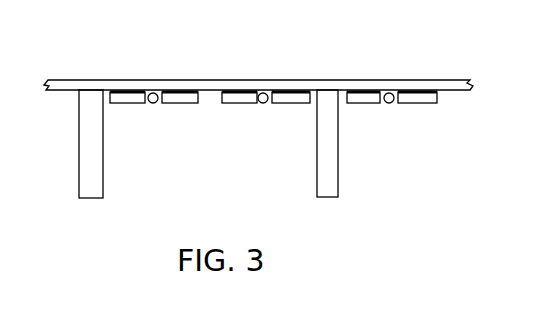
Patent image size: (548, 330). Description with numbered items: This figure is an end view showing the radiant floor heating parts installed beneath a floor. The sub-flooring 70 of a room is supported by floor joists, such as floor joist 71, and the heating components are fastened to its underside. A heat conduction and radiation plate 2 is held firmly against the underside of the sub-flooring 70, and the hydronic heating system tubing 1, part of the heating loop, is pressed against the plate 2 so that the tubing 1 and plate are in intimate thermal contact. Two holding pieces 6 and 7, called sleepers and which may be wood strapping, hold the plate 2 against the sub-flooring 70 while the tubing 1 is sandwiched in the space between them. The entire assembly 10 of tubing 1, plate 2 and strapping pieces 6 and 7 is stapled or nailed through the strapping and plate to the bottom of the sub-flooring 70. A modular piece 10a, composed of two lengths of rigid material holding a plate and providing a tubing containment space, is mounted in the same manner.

The hydronic heating system tubing 1 is at (156, 107).
The heat conduction and radiation plate 2 is at (128, 90).
The holding piece 6 is at (129, 104).
The holding piece 7 is at (182, 104).
The assembly 10 is at (210, 143).
The modular piece 10a is at (392, 113).
The sub-flooring 70 is at (214, 80).
The floor joist 71 is at (79, 138).